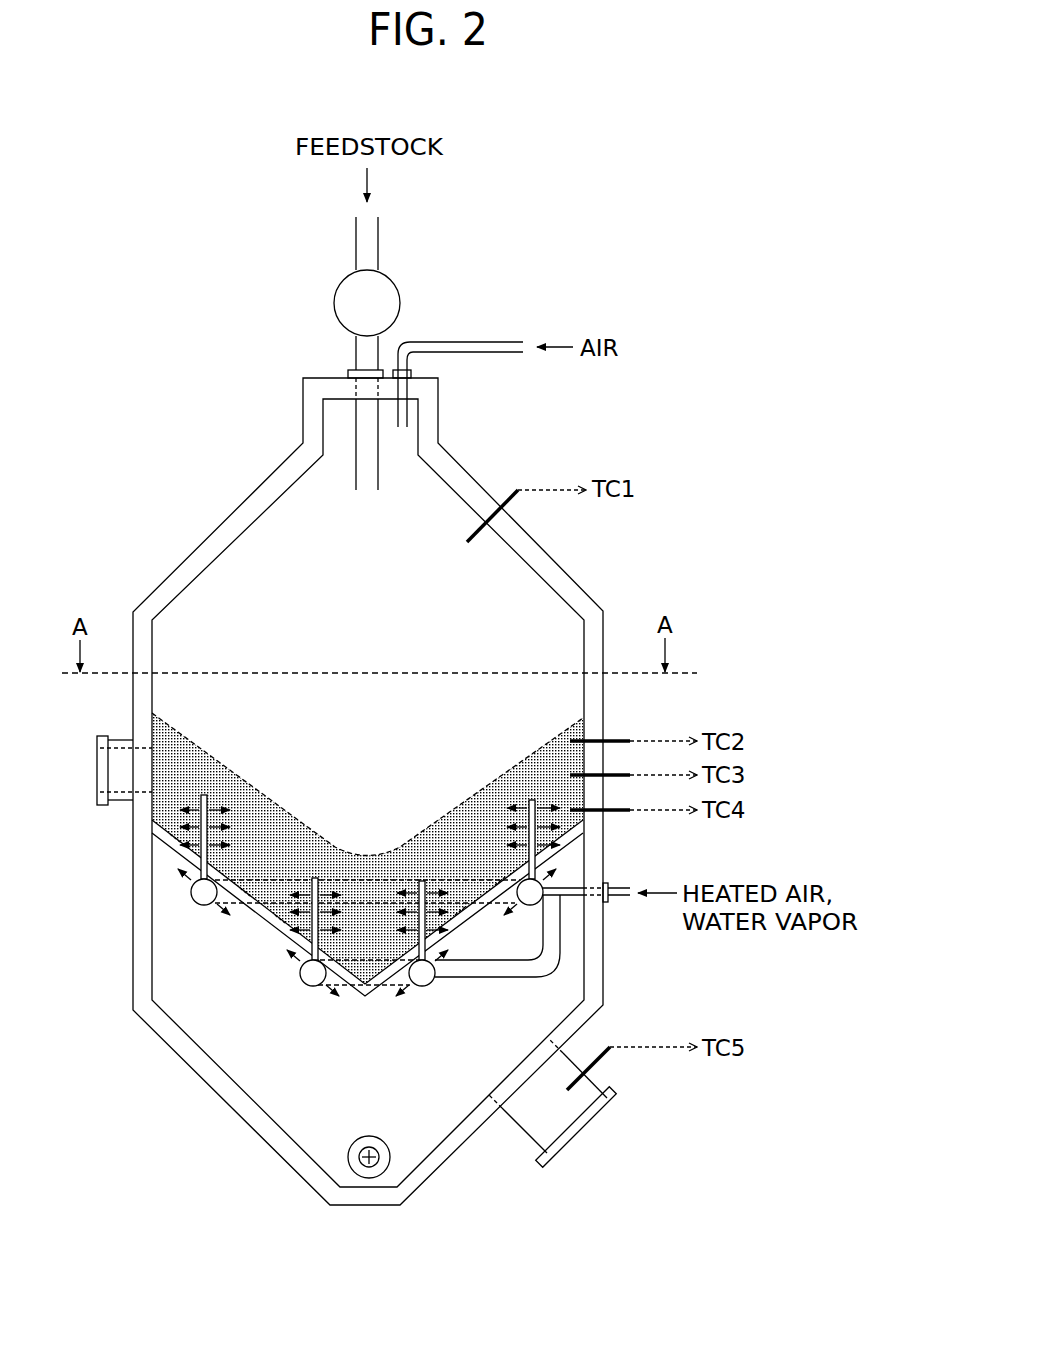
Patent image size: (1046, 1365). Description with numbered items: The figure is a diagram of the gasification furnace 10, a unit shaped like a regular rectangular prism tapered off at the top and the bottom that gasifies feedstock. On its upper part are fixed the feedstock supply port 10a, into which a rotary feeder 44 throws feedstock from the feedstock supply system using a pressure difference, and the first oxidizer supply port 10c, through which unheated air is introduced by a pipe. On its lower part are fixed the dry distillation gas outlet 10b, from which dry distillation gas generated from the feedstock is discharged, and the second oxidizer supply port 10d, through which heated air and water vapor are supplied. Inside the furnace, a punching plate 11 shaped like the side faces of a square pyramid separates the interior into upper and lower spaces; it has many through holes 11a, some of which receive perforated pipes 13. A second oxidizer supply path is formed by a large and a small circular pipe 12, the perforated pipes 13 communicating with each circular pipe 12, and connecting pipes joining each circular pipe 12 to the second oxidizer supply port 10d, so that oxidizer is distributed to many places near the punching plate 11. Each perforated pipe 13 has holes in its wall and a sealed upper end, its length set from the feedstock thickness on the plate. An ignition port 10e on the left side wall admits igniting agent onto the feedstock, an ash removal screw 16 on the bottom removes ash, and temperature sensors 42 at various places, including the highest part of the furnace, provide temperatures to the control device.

The gasification furnace 10 is at (681, 466).
The feedstock supply port 10a is at (357, 374).
The dry distillation gas outlet 10b is at (528, 1137).
The first oxidizer supply port 10c is at (408, 378).
The second oxidizer supply port 10d is at (608, 902).
The ignition port 10e is at (120, 803).
The punching plate 11 is at (257, 910).
The through hole 11a is at (280, 923).
The circular pipe 12 is at (207, 906).
The perforated pipe 13 is at (204, 795).
The ash removal screw 16 is at (369, 1180).
The temperature sensor 42 is at (512, 490).
The rotary feeder 44 is at (400, 303).